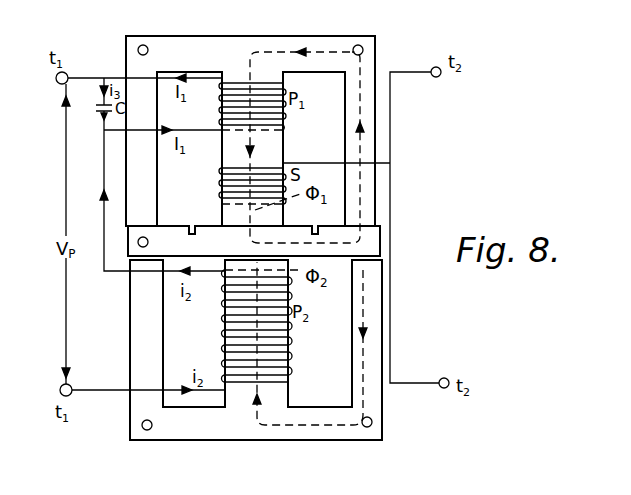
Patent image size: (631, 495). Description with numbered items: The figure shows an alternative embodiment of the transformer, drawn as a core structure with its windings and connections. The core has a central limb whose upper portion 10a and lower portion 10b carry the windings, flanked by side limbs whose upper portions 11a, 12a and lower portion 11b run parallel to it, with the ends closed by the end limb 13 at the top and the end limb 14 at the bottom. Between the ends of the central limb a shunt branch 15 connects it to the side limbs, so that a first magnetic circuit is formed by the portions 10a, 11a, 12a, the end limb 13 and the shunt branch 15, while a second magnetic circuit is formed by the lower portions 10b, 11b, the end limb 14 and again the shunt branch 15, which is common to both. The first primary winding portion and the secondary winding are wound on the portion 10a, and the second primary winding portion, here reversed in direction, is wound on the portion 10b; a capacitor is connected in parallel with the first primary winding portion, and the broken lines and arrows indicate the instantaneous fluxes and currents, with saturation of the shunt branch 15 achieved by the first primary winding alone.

The end limb 13 is at (266, 46).
The end limb 14 is at (212, 437).
The shunt branch 15 is at (340, 232).
The upper portion of side limb 12a is at (375, 52).
The upper portion of central limb 10a is at (284, 144).
The lower portion of central limb 10b is at (286, 396).
The upper portion of side limb 11a is at (161, 178).
The lower portion of side limb 11b is at (152, 334).